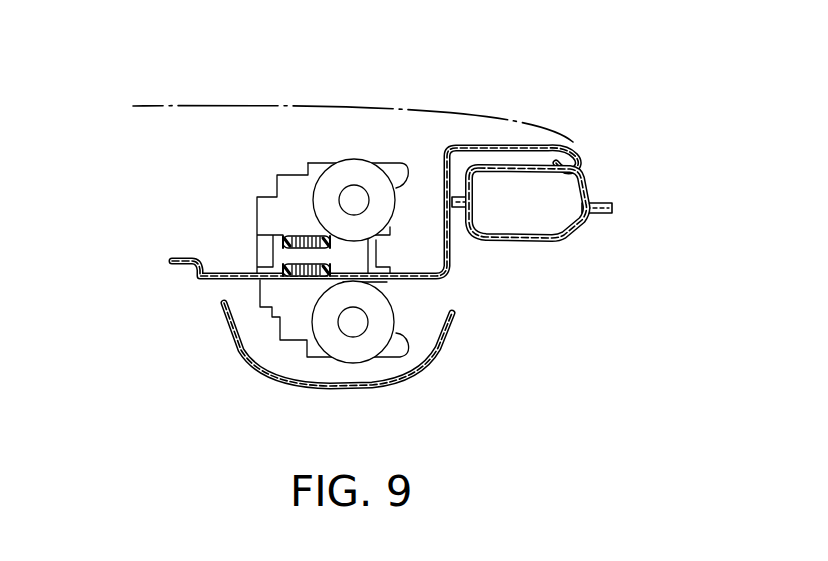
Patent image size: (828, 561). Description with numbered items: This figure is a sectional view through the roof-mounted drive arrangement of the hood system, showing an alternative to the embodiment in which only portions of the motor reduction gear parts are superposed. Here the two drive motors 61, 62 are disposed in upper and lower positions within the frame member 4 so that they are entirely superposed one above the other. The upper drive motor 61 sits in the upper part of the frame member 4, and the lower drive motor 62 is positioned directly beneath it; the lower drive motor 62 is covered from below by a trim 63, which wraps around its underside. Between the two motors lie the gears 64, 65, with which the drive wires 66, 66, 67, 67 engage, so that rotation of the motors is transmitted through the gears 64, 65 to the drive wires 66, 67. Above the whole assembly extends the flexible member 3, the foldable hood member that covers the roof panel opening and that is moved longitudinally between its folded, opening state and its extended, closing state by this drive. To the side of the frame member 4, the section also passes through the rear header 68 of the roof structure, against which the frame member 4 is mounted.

The flexible member 3 is at (245, 106).
The frame member 4 is at (186, 272).
The drive motor 61 is at (357, 162).
The drive motor 62 is at (408, 337).
The trim 63 is at (398, 382).
The gear 64 is at (322, 236).
The gear 65 is at (260, 318).
The drive wire 66 is at (338, 230).
The drive wire 67 is at (278, 275).
The rear header 68 is at (580, 236).